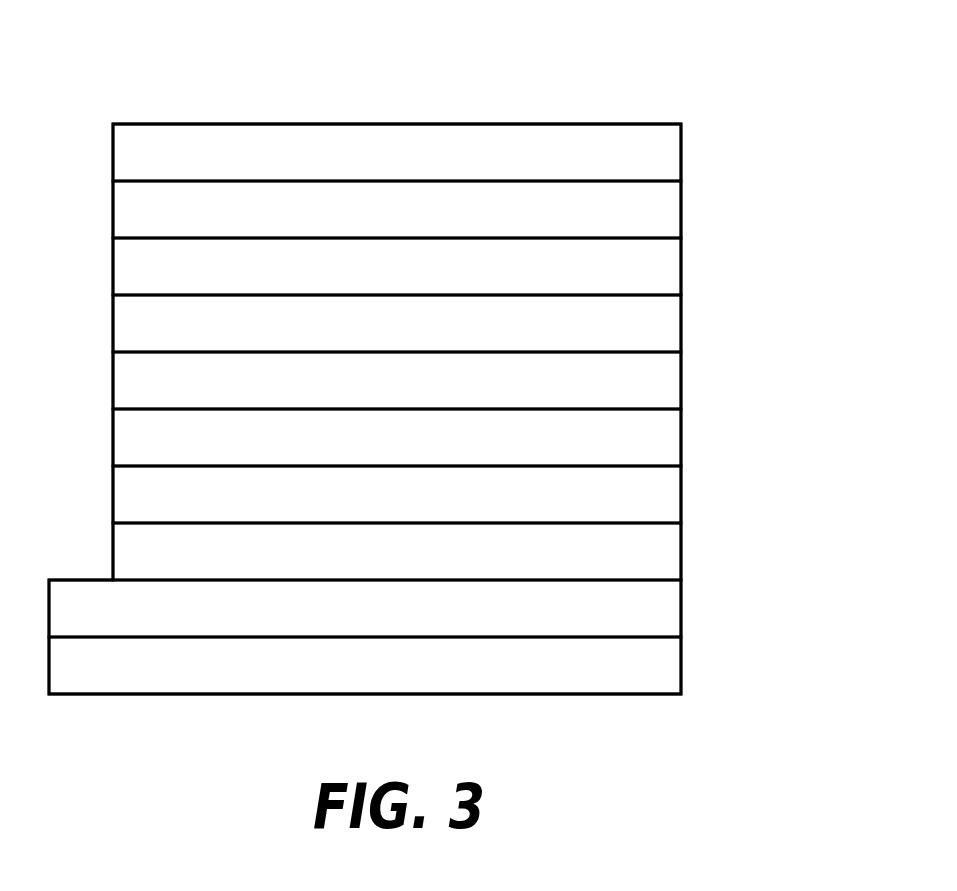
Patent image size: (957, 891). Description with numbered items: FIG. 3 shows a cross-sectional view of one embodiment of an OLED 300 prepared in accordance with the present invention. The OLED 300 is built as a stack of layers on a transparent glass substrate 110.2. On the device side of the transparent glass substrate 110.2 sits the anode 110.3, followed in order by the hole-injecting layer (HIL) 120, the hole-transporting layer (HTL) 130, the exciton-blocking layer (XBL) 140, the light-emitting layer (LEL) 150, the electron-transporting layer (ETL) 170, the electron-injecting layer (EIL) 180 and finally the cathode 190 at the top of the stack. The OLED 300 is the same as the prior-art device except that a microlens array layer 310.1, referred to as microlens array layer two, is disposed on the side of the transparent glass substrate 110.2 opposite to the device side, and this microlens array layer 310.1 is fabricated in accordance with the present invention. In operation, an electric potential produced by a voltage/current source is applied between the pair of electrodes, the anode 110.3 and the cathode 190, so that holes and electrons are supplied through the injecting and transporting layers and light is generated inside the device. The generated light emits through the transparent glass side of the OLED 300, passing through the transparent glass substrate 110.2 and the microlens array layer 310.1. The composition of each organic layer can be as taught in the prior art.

The OLED 300 is at (468, 96).
The cathode 190 is at (681, 150).
The electron-injecting layer (EIL) 180 is at (681, 207).
The electron-transporting layer (ETL) 170 is at (681, 264).
The light-emitting layer (LEL) 150 is at (681, 321).
The exciton-blocking layer (XBL) 140 is at (681, 378).
The hole-transporting layer (HTL) 130 is at (681, 435).
The hole-injecting layer (HIL) 120 is at (681, 492).
The anode 110.3 is at (681, 549).
The transparent glass substrate 110.2 is at (681, 606).
The microlens array layer 310.1 is at (681, 663).